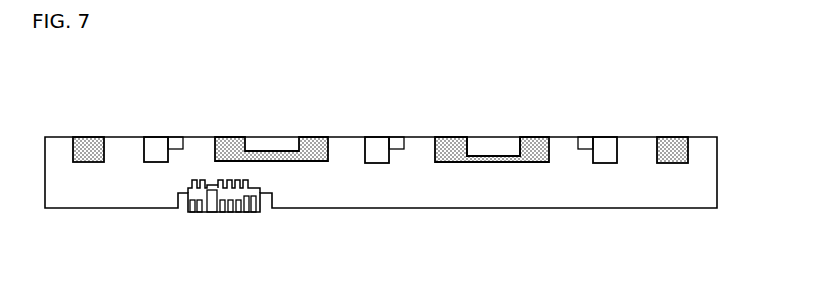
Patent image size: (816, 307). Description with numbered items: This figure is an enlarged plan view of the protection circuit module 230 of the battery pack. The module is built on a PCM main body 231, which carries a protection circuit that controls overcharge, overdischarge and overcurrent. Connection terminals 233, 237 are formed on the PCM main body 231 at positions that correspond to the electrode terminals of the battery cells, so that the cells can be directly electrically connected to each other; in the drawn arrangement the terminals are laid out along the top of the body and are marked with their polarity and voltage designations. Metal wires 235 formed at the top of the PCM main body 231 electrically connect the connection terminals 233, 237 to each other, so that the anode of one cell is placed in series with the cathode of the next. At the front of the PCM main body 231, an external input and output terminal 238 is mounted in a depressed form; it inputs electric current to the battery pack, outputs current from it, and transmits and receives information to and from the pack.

The protection circuit module 230 is at (77, 84).
The PCM main body 231 is at (606, 194).
The connection terminal 233 is at (679, 137).
The metal wire 235 is at (480, 155).
The connection terminal 237 is at (536, 137).
The external input and output terminal 238 is at (228, 212).